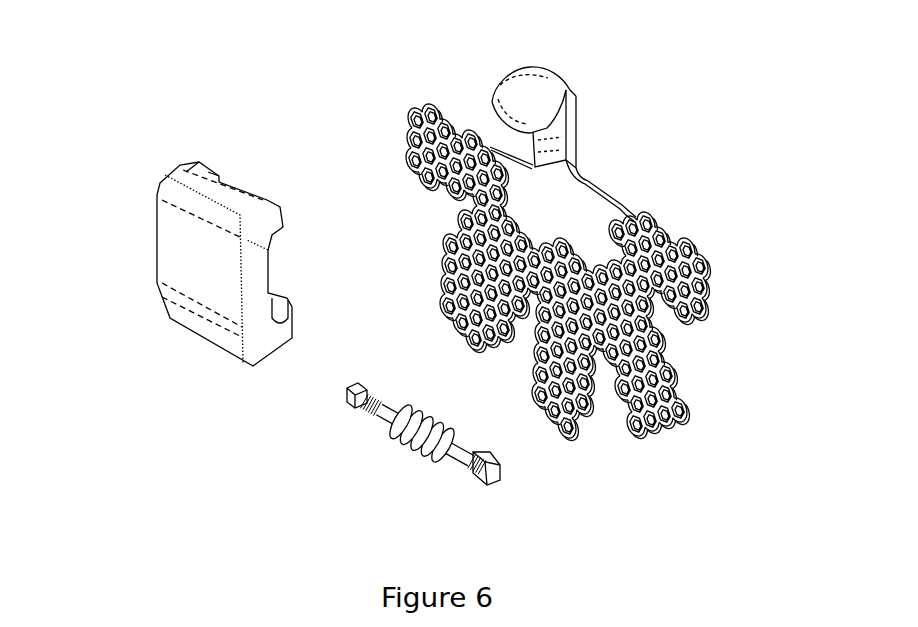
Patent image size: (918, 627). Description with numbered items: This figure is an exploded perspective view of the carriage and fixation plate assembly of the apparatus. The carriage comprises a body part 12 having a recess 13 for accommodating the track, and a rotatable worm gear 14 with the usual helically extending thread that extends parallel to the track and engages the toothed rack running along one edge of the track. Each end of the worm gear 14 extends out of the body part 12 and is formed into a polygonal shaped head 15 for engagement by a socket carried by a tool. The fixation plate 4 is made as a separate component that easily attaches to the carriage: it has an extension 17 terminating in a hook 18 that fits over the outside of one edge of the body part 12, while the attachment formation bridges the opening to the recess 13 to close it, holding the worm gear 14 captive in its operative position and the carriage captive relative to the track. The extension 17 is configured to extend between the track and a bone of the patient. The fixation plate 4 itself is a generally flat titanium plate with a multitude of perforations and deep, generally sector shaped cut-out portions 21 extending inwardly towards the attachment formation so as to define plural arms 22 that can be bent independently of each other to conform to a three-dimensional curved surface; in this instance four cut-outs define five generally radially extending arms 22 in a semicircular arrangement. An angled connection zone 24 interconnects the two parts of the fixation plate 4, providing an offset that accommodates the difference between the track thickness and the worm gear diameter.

The fixation plate 4 is at (608, 307).
The body part 12 is at (202, 277).
The recess 13 is at (267, 280).
The worm gear 14 is at (397, 443).
The polygonal shaped head 15 is at (348, 400).
The extension 17 is at (550, 130).
The hook 18 is at (517, 91).
The sector shaped cut-out portion 21 is at (657, 313).
The arm 22 is at (710, 290).
The angled connection zone 24 is at (580, 168).